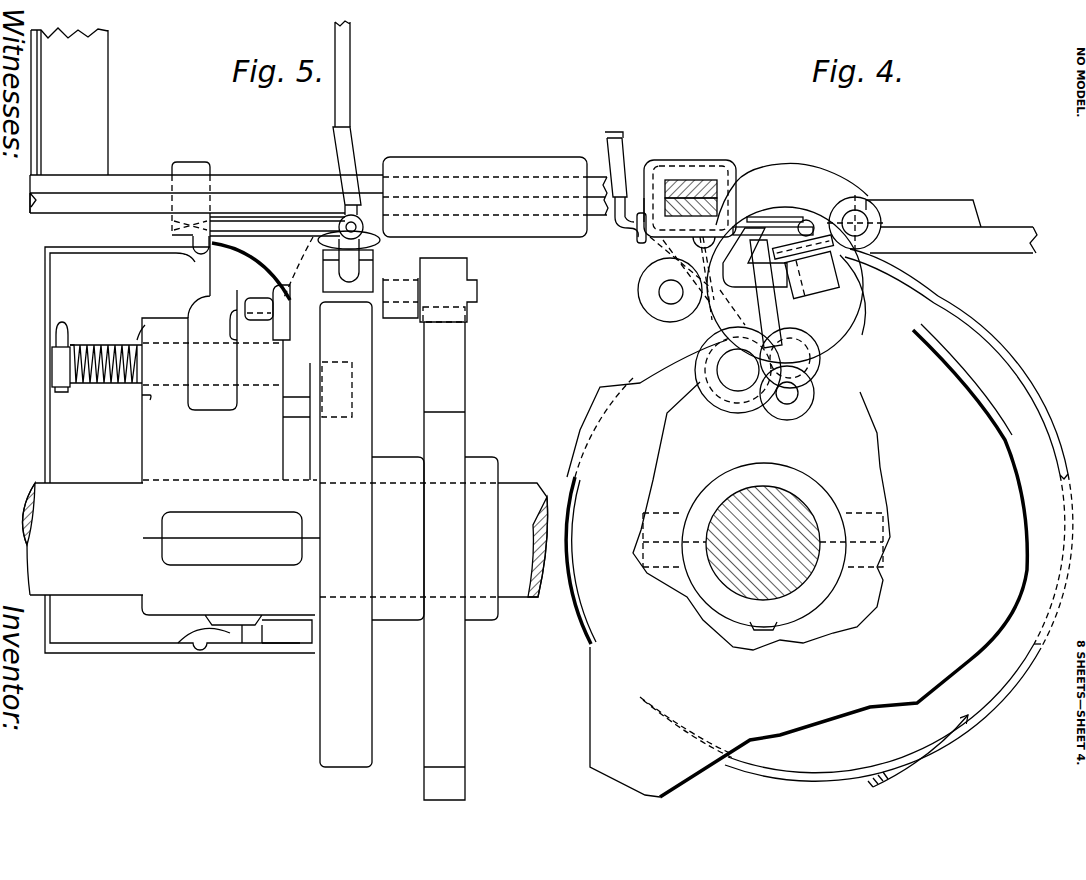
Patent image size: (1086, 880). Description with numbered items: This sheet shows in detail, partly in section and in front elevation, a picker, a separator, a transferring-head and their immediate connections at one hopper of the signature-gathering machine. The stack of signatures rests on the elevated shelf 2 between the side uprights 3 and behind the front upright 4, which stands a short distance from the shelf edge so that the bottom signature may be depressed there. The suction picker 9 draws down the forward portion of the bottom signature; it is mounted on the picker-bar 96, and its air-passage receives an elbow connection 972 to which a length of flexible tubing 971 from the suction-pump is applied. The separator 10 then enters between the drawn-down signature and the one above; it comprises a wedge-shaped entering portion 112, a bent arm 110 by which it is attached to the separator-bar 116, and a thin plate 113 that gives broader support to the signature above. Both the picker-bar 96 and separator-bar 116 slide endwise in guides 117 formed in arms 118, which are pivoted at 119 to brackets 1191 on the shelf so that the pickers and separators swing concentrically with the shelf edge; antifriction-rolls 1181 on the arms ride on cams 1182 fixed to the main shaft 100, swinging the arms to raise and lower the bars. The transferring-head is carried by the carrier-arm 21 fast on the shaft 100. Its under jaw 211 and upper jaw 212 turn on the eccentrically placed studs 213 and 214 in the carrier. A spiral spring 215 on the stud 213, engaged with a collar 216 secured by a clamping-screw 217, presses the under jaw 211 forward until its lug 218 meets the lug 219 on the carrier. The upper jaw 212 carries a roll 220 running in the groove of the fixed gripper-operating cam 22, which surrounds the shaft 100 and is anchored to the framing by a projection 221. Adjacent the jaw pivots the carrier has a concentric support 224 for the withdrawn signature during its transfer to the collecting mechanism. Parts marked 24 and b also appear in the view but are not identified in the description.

In FIG. 4, the elevated shelf 2 is at (995, 232).
In FIG. 5, the side uprights 3 is at (40, 104).
In FIG. 5, the front upright 4 is at (111, 57).
In FIG. 5, the picker 9 is at (360, 262).
In FIG. 4, the picker 9 is at (728, 262).
In FIG. 5, the separator 10 is at (262, 220).
In FIG. 4, the separator 10 is at (858, 210).
In FIG. 5, the carrier-arm 21 is at (160, 428).
In FIG. 5, the gripper-operating cam 22 is at (318, 728).
In FIG. 4, the gripper-operating cam 22 is at (990, 672).
In FIG. 5, the casing 24 is at (43, 270).
In FIG. 5, the picker-bar 96 is at (70, 213).
In FIG. 4, the picker-bar 96 is at (666, 203).
In FIG. 5, the main shaft 100 is at (510, 483).
In FIG. 4, the main shaft 100 is at (713, 567).
In FIG. 5, the bent arm 110 is at (196, 160).
In FIG. 5, the wedge-shaped portion 112 is at (176, 229).
In FIG. 4, the thin plate 113 is at (783, 217).
In FIG. 5, the separator-bar 116 is at (55, 175).
In FIG. 4, the separator-bar 116 is at (703, 180).
In FIG. 5, the guides 117 is at (478, 157).
In FIG. 4, the guides 117 is at (688, 160).
In FIG. 5, the arms 118 is at (400, 320).
In FIG. 4, the arms 118 is at (752, 173).
In FIG. 4, the pivots 119 is at (870, 203).
In FIG. 5, the under jaw 211 is at (207, 283).
In FIG. 4, the under jaw 211 is at (816, 303).
In FIG. 5, the upper jaw 212 is at (250, 250).
In FIG. 4, the upper jaw 212 is at (713, 300).
In FIG. 5, the pivot stud of under jaw 213 is at (50, 360).
In FIG. 4, the pivot stud of under jaw 213 is at (812, 337).
In FIG. 5, the pivot stud of upper jaw 214 is at (140, 385).
In FIG. 4, the pivot stud of upper jaw 214 is at (727, 368).
In FIG. 5, the spiral spring 215 is at (95, 340).
In FIG. 5, the collar 216 is at (62, 392).
In FIG. 5, the clamping-screw 217 is at (60, 320).
In FIG. 4, the projection or lug 218 is at (795, 310).
In FIG. 5, the projection or lug 219 is at (258, 297).
In FIG. 4, the projection or lug 219 is at (658, 283).
In FIG. 5, the pin or roll 220 is at (340, 360).
In FIG. 4, the pin or roll 220 is at (783, 415).
In FIG. 4, the projection 221 is at (1024, 460).
In FIG. 4, the concentric support 224 is at (1005, 362).
In FIG. 5, the flexible tubing 971 is at (352, 135).
In FIG. 4, the flexible tubing 971 is at (624, 138).
In FIG. 5, the elbow connections 972 is at (356, 222).
In FIG. 4, the elbow connections 972 is at (640, 243).
In FIG. 5, the antifriction-rolls 1181 is at (468, 268).
In FIG. 4, the antifriction-rolls 1181 is at (640, 307).
In FIG. 5, the cams 1182 is at (467, 745).
In FIG. 4, the cams 1182 is at (628, 356).
In FIG. 4, the brackets 1191 is at (914, 208).
In FIG. 5, the rod b is at (353, 50).